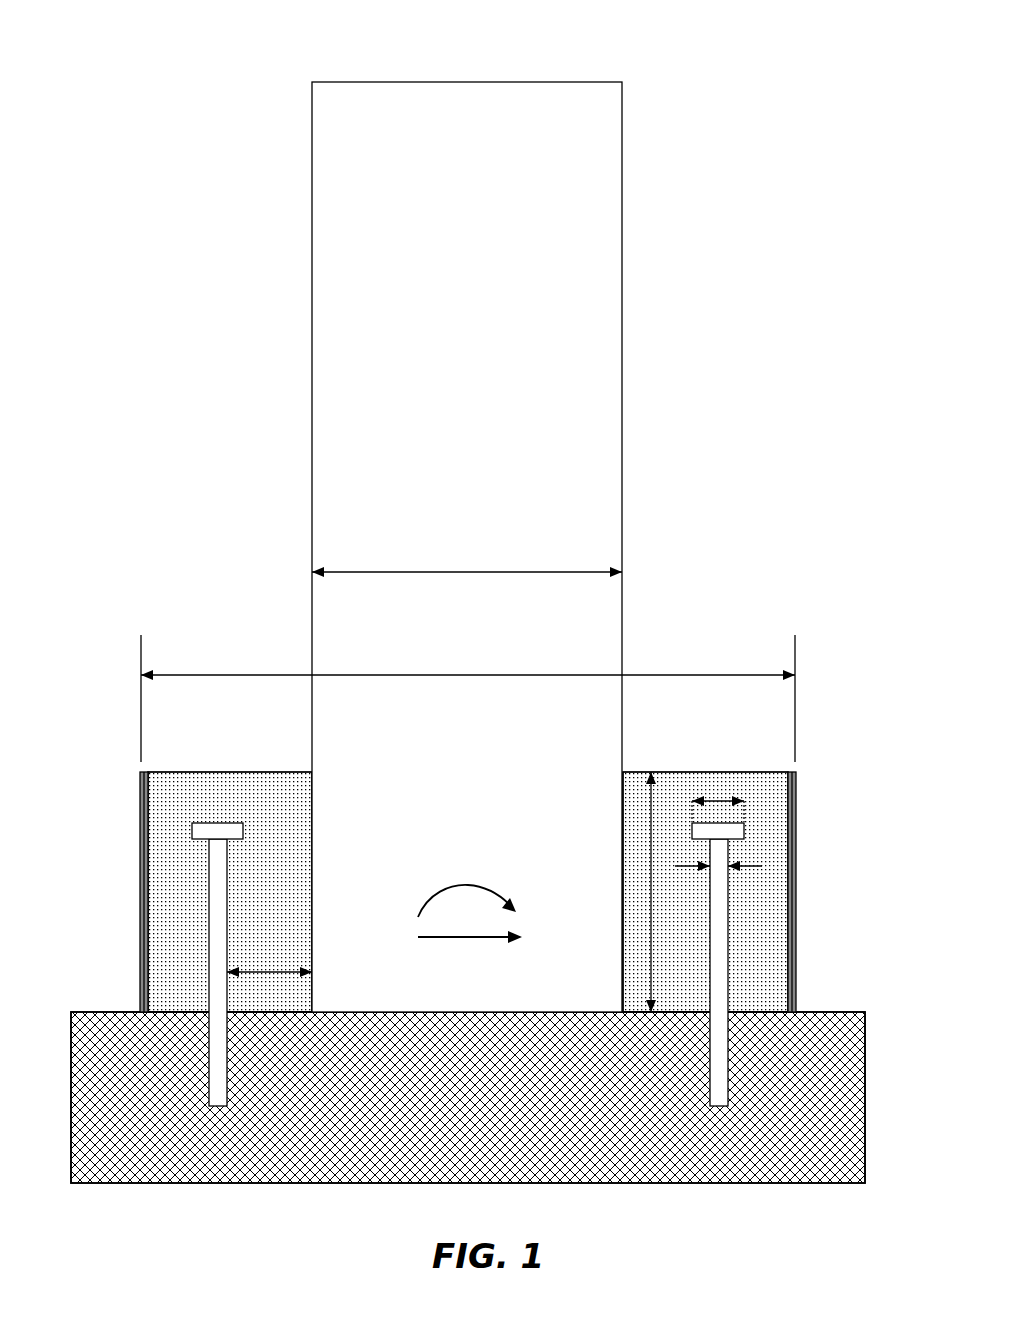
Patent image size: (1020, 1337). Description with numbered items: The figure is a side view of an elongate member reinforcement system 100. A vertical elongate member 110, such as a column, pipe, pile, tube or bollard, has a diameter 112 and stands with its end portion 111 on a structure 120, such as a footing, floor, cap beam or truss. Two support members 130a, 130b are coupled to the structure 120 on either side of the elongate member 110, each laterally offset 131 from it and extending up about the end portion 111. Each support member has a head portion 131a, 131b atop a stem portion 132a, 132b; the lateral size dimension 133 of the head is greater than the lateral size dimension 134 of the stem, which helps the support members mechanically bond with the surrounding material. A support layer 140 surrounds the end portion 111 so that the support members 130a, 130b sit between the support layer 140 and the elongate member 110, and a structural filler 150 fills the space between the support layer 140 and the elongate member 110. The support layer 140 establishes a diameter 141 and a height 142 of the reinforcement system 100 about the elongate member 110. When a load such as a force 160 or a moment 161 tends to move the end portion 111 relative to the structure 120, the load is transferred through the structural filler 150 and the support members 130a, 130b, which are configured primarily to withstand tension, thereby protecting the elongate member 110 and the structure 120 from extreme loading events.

The elongate member reinforcement system 100 is at (243, 42).
The elongate member 110 is at (312, 312).
The end portion 111 is at (290, 822).
The diameter 112 is at (461, 572).
The structure 120 is at (105, 1012).
The support member 130a is at (190, 880).
The support member 130b is at (755, 903).
The lateral offset 131 is at (272, 972).
The head portion 131a is at (192, 831).
The head portion 131b is at (744, 830).
The stem portion 132a is at (209, 921).
The stem portion 132b is at (728, 958).
The lateral size dimension of head portion 133 is at (717, 801).
The lateral size dimension of stem portion 134 is at (681, 866).
The support layer 140 is at (140, 797).
The diameter 141 is at (468, 675).
The height 142 is at (651, 892).
The structural filler 150 is at (274, 870).
The force 160 is at (466, 937).
The moment 161 is at (466, 885).